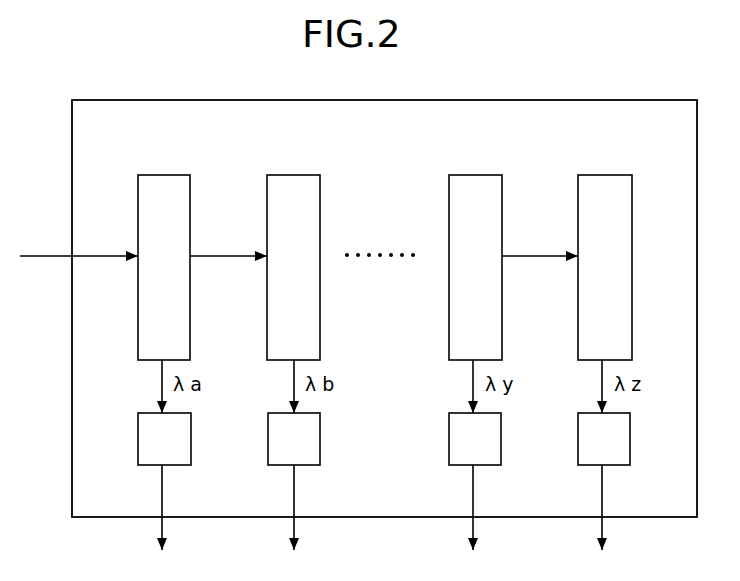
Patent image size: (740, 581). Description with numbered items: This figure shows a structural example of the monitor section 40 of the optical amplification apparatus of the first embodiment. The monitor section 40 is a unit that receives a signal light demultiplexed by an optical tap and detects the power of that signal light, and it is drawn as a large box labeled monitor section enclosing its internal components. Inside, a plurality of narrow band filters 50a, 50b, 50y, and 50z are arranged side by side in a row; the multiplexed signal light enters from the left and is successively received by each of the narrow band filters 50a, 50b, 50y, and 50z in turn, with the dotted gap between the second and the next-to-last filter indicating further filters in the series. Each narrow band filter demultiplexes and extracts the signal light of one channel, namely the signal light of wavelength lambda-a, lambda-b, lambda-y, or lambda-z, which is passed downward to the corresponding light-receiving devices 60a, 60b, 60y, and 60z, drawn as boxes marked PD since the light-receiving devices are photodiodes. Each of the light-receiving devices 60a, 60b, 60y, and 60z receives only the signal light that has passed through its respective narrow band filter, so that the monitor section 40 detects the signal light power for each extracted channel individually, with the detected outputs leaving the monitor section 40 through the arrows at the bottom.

The monitor section 40 is at (630, 100).
The narrow band filter 50a is at (162, 176).
The narrow band filter 50b is at (292, 176).
The narrow band filter 50y is at (472, 176).
The narrow band filter 50z is at (601, 176).
The light-receiving device 60a is at (177, 466).
The light-receiving device 60b is at (306, 466).
The light-receiving device 60y is at (485, 466).
The light-receiving device 60z is at (615, 466).